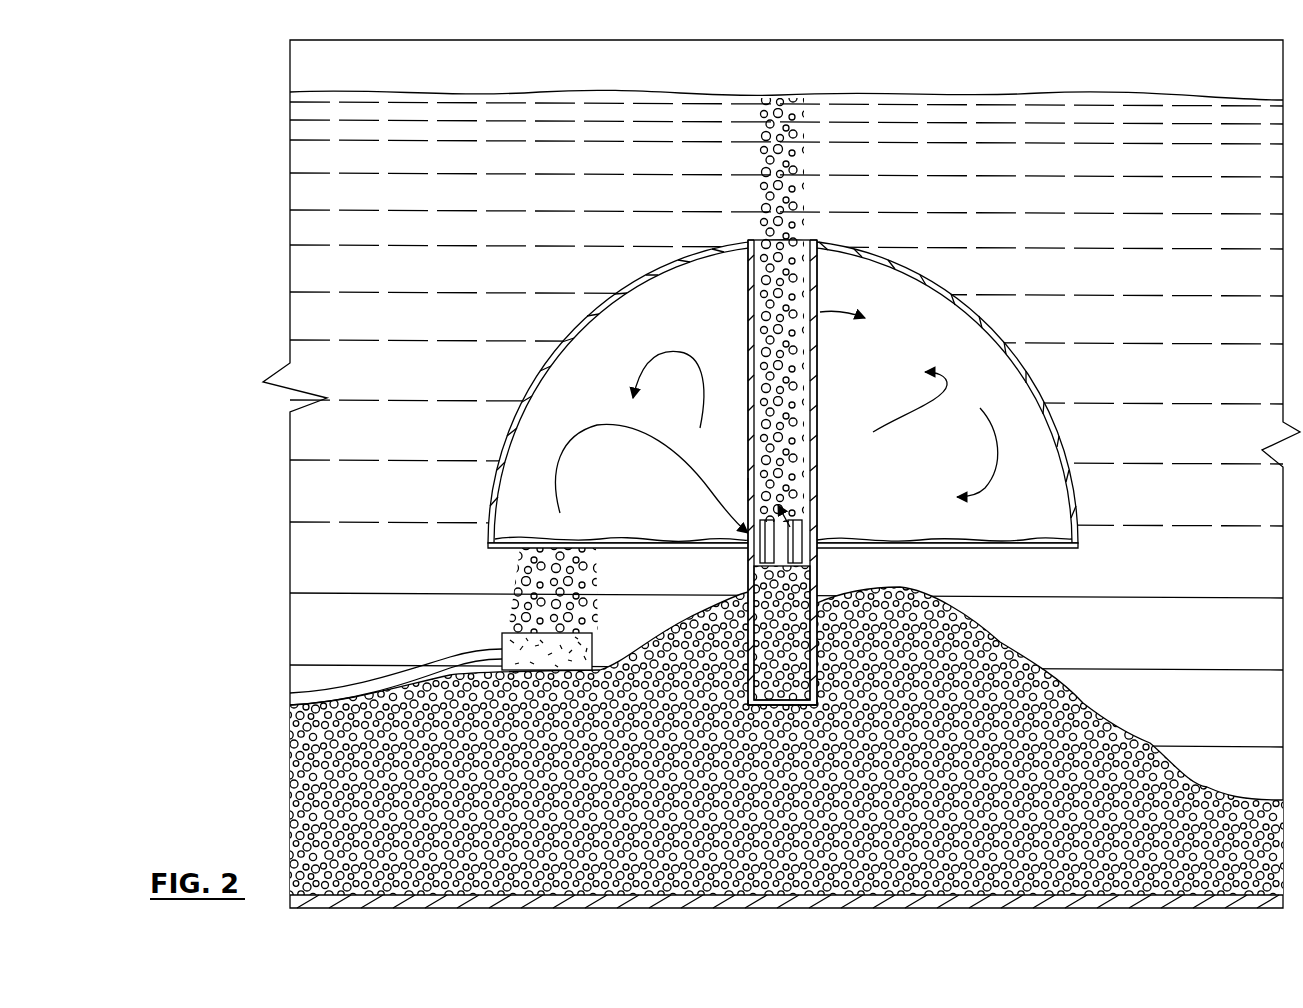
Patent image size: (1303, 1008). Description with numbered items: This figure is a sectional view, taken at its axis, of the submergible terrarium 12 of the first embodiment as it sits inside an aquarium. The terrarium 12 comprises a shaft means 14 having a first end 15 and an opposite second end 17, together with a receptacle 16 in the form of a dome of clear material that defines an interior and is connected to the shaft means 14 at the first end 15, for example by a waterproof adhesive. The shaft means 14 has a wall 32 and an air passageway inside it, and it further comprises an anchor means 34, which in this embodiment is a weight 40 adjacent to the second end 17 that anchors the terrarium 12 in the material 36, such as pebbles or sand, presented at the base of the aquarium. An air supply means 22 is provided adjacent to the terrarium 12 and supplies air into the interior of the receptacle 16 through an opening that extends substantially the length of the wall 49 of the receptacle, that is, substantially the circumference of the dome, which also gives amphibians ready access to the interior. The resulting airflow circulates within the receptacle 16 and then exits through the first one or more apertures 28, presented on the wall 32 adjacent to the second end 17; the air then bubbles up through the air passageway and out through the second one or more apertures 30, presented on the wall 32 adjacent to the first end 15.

The terrarium 12 is at (1012, 280).
The shaft means 14 is at (820, 467).
The first end 15 is at (817, 240).
The receptacle 16 is at (1042, 388).
The second end 17 is at (775, 704).
The air supply means 22 is at (502, 633).
The first one or more apertures 28 is at (797, 553).
The second one or more apertures 30 is at (765, 240).
The wall 32 is at (748, 482).
The anchor means 34 is at (870, 590).
The material 36 is at (1035, 685).
The weight 40 is at (797, 655).
The wall of the receptacle 49 is at (1078, 527).